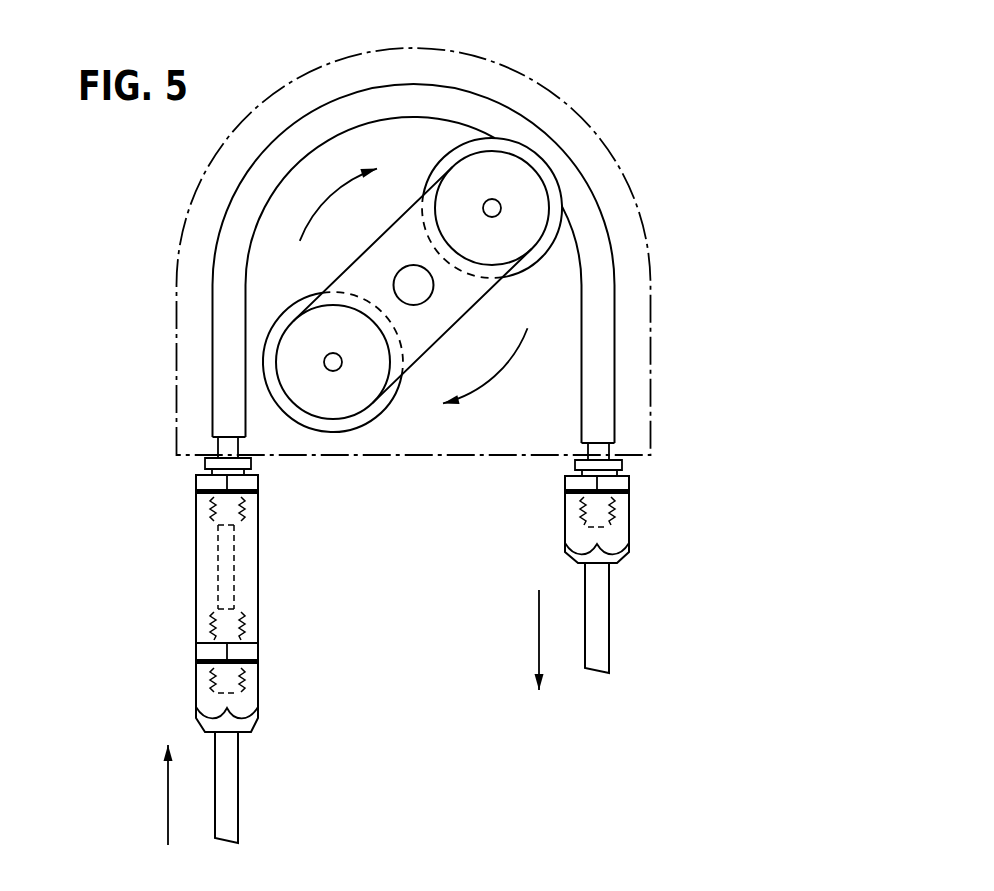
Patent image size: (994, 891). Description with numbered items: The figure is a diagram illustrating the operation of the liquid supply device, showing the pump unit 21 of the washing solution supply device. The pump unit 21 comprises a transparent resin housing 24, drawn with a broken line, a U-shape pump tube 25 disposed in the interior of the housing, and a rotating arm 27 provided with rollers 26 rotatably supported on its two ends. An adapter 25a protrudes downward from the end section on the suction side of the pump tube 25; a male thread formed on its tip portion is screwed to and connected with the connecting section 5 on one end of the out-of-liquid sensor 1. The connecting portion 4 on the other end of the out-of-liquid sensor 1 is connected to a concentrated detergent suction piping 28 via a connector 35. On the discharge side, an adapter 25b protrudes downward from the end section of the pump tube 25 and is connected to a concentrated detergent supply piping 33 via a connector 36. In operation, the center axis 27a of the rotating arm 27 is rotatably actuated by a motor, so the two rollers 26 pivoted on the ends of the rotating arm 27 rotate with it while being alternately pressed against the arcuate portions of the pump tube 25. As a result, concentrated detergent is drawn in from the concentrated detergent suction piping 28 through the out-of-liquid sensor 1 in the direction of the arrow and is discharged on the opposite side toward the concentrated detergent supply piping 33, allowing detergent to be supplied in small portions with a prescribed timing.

The out-of-liquid sensor 1 is at (257, 602).
The connecting portion 4 is at (197, 622).
The connecting section 5 is at (203, 508).
The pump unit 21 is at (618, 138).
The transparent resin housing 24 is at (556, 100).
The pump tube 25 is at (610, 343).
The adapter 25a is at (203, 463).
The adapter 25b is at (622, 463).
The rollers 26 is at (545, 257).
The rotating arm 27 is at (383, 380).
The center axis 27a is at (397, 272).
The concentrated detergent suction piping 28 is at (238, 798).
The concentrated detergent supply piping 33 is at (608, 607).
The connector 35 is at (195, 697).
The connector 36 is at (630, 523).